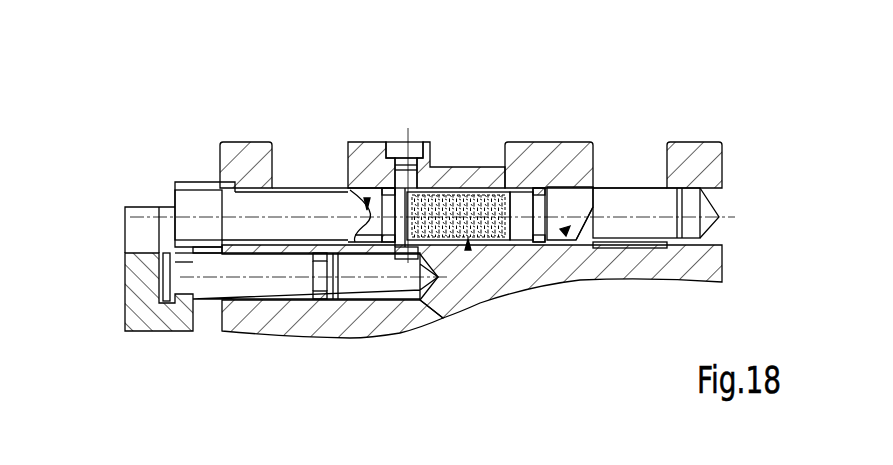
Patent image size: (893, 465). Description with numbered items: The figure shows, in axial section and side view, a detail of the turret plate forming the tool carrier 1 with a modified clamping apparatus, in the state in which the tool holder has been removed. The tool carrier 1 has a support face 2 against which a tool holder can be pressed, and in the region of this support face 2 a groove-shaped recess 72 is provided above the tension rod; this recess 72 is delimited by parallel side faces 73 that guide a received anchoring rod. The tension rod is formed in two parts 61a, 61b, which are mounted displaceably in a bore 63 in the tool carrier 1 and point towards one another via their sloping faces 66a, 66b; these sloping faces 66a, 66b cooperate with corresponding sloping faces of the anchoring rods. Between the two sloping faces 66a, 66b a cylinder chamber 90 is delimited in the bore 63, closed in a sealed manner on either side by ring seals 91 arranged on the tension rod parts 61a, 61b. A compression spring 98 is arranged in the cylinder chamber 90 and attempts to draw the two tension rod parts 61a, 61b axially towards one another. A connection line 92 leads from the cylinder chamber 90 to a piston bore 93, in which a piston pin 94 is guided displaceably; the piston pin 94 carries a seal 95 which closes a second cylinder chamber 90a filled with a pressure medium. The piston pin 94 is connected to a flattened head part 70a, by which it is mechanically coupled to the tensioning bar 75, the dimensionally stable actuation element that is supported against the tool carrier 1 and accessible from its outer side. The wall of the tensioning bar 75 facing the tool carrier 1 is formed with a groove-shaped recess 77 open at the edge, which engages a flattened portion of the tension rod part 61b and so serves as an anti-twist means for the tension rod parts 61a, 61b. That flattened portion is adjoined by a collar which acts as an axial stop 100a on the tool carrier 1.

The tool carrier 1 is at (707, 180).
The support face 2 is at (699, 150).
The tension rod part 61a is at (367, 200).
The tension rod part 61b is at (565, 232).
The bore 63 is at (714, 222).
The sloping face 66a is at (385, 257).
The sloping face 66b is at (583, 218).
The flattened head part 70a is at (170, 303).
The groove-shaped recess 72 is at (312, 186).
The side face 73 is at (283, 175).
The tensioning bar 75 is at (137, 303).
The groove-shaped recess 77 is at (157, 233).
The cylinder chamber 90 is at (468, 250).
The second cylinder chamber 90a is at (408, 300).
The ring seal 91 is at (537, 188).
The connection line 92 is at (428, 258).
The piston bore 93 is at (240, 296).
The piston pin 94 is at (268, 287).
The seal 95 is at (320, 299).
The compression spring 98 is at (487, 197).
The axial stop 100a is at (222, 162).